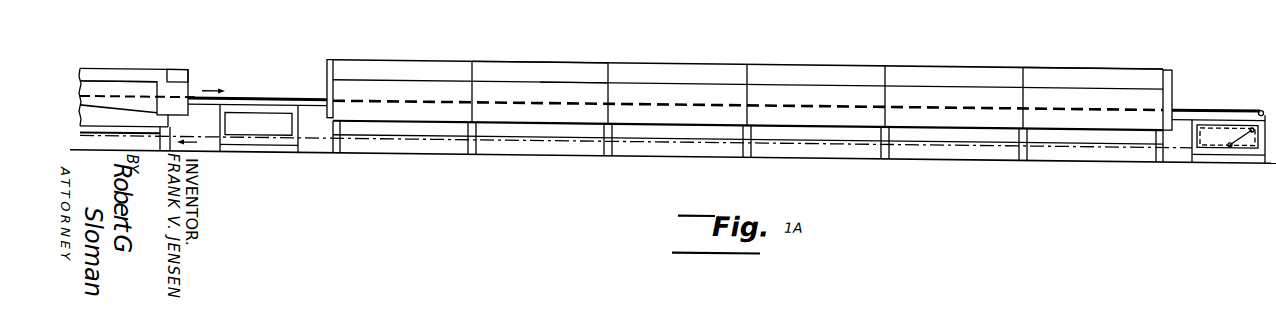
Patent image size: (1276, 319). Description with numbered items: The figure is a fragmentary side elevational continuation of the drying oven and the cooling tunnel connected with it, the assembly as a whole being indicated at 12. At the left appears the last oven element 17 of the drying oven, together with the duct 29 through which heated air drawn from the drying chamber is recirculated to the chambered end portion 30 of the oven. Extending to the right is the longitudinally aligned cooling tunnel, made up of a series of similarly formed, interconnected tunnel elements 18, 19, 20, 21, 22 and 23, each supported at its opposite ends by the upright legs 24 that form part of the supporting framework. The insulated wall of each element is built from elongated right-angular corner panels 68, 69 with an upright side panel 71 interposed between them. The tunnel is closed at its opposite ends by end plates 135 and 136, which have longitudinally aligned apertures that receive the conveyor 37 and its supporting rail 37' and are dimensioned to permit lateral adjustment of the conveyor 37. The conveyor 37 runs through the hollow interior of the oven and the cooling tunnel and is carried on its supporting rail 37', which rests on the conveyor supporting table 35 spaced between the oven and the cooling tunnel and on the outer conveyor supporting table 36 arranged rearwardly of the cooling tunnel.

The conveyor apparatus 12 is at (334, 41).
The oven element 17 is at (91, 69).
The tunnel element 18 is at (398, 66).
The tunnel element 19 is at (545, 66).
The tunnel element 20 is at (663, 62).
The tunnel element 21 is at (818, 56).
The tunnel element 22 is at (940, 64).
The tunnel element 23 is at (1067, 63).
The upright legs 24 is at (473, 148).
The duct 29 is at (122, 68).
The chambered end portion 30 is at (187, 68).
The conveyor supporting table 35 is at (260, 107).
The outer conveyor supporting table 36 is at (1228, 139).
The conveyor element 37 is at (726, 136).
The supporting rail 37' is at (726, 95).
The corner panel 68 is at (585, 106).
The corner panel 69 is at (517, 57).
The side panel 71 is at (590, 84).
The end plate 135 is at (327, 58).
The end plate 136 is at (1170, 57).